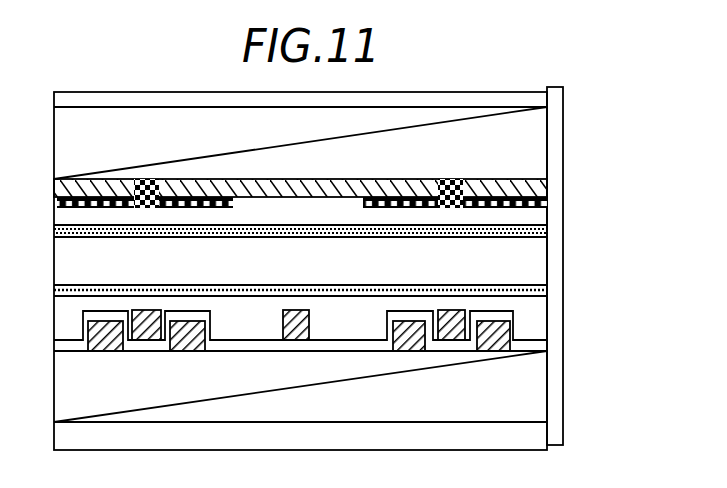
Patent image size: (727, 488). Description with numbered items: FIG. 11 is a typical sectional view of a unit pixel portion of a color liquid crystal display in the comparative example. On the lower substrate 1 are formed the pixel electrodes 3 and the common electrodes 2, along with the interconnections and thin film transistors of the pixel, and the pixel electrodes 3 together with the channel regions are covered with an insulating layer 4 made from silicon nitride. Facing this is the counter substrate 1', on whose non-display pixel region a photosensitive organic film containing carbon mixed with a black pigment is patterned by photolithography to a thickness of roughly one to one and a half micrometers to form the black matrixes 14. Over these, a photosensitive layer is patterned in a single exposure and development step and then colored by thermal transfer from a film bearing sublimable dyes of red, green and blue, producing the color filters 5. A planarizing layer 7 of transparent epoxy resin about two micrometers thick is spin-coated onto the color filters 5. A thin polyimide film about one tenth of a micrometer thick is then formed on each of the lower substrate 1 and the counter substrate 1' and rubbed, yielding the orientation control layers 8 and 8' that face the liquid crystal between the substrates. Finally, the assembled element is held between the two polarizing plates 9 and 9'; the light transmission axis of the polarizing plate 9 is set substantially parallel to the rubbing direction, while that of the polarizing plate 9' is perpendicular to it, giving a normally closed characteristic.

The lower substrate 1 is at (334, 379).
The counter substrate 1' is at (336, 143).
The common electrodes 2 is at (190, 346).
The pixel electrodes 3 is at (147, 340).
The insulating layer 4 is at (548, 335).
The color filters 5 is at (337, 181).
The planarizing layer 7 is at (538, 220).
The orientation control layer 8 is at (334, 293).
The orientation control layer 8' is at (329, 253).
The polarizing plate 9 is at (332, 435).
The polarizing plate 9' is at (334, 105).
The black matrixes 14 is at (540, 198).